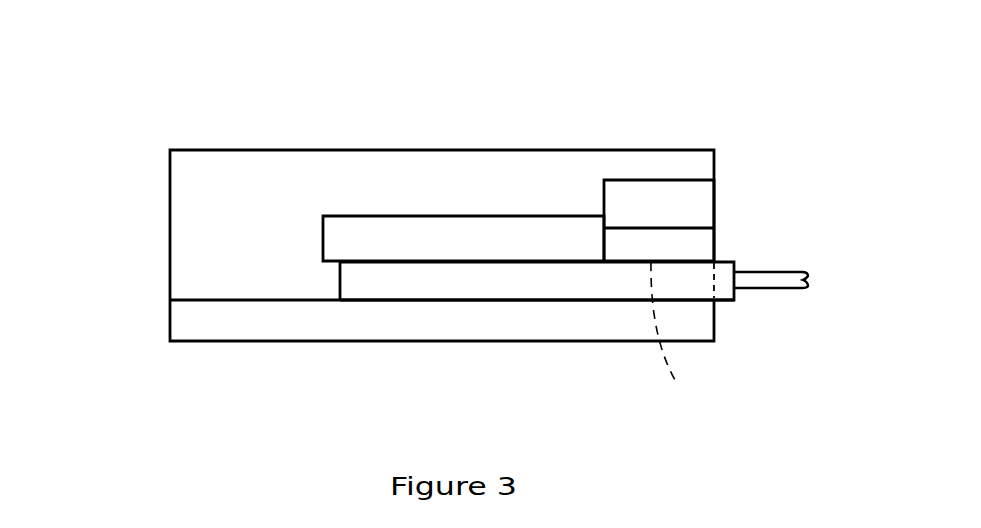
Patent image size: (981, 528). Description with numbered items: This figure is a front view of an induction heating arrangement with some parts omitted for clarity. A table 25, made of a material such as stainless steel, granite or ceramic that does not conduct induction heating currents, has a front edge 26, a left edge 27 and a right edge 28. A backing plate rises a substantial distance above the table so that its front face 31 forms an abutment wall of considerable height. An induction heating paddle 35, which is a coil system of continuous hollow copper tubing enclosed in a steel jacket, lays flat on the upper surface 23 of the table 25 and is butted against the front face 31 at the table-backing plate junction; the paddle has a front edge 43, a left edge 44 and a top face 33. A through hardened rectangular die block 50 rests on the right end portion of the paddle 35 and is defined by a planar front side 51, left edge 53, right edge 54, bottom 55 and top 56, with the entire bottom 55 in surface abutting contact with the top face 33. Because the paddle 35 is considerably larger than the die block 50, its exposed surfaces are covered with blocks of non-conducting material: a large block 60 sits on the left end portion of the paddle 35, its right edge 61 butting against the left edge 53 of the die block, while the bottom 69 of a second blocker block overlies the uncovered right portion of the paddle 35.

The upper surface 23 is at (257, 300).
The table 25 is at (147, 309).
The front edge 26 is at (237, 320).
The left edge 27 is at (167, 325).
The right edge 28 is at (716, 320).
The front face 31 is at (227, 173).
The top face 33 is at (673, 262).
The paddle 35 is at (742, 297).
The front edge 43 is at (512, 282).
The left edge 44 is at (340, 282).
The die block 50 is at (665, 180).
The front side 51 is at (693, 202).
The left edge 53 is at (604, 198).
The right edge 54 is at (714, 212).
The bottom 55 is at (674, 340).
The top 56 is at (688, 177).
The large block 60 is at (323, 237).
The right edge 61 is at (607, 242).
The bottom 69 is at (623, 262).